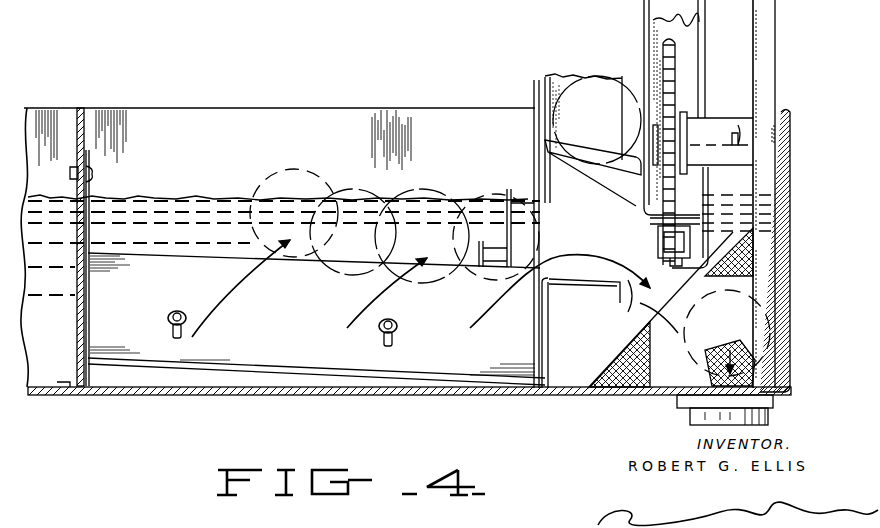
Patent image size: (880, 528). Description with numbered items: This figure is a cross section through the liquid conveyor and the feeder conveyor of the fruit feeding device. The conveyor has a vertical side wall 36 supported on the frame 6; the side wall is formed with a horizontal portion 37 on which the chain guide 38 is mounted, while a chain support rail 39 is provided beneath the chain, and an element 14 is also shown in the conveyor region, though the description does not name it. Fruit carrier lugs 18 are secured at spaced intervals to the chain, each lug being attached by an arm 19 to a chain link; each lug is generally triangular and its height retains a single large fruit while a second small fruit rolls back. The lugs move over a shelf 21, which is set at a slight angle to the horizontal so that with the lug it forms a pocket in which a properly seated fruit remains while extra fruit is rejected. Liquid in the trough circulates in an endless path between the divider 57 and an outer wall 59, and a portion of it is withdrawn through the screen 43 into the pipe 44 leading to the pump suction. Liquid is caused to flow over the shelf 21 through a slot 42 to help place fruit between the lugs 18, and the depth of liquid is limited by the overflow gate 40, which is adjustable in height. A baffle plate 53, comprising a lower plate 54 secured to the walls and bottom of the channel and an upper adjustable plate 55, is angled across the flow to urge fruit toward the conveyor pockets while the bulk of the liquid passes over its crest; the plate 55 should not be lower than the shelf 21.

The frame 6 is at (777, 45).
The chain 14 is at (677, 52).
The fruit carrier lug 18 is at (532, 193).
The arm 19 is at (642, 304).
The shelf 21 is at (582, 286).
The vertical side wall 36 is at (657, 80).
The horizontal portion 37 is at (647, 225).
The chain guide 38 is at (690, 223).
The chain support rail 39 is at (680, 268).
The overflow gate 40 is at (735, 193).
The slot 42 is at (640, 303).
The screen 43 is at (630, 378).
The pipe 44 is at (693, 414).
The baffle plate 53 is at (120, 297).
The lower plate 54 is at (140, 372).
The upper adjustable plate 55 is at (245, 345).
The divider 57 is at (85, 118).
The outer wall 59 is at (549, 357).